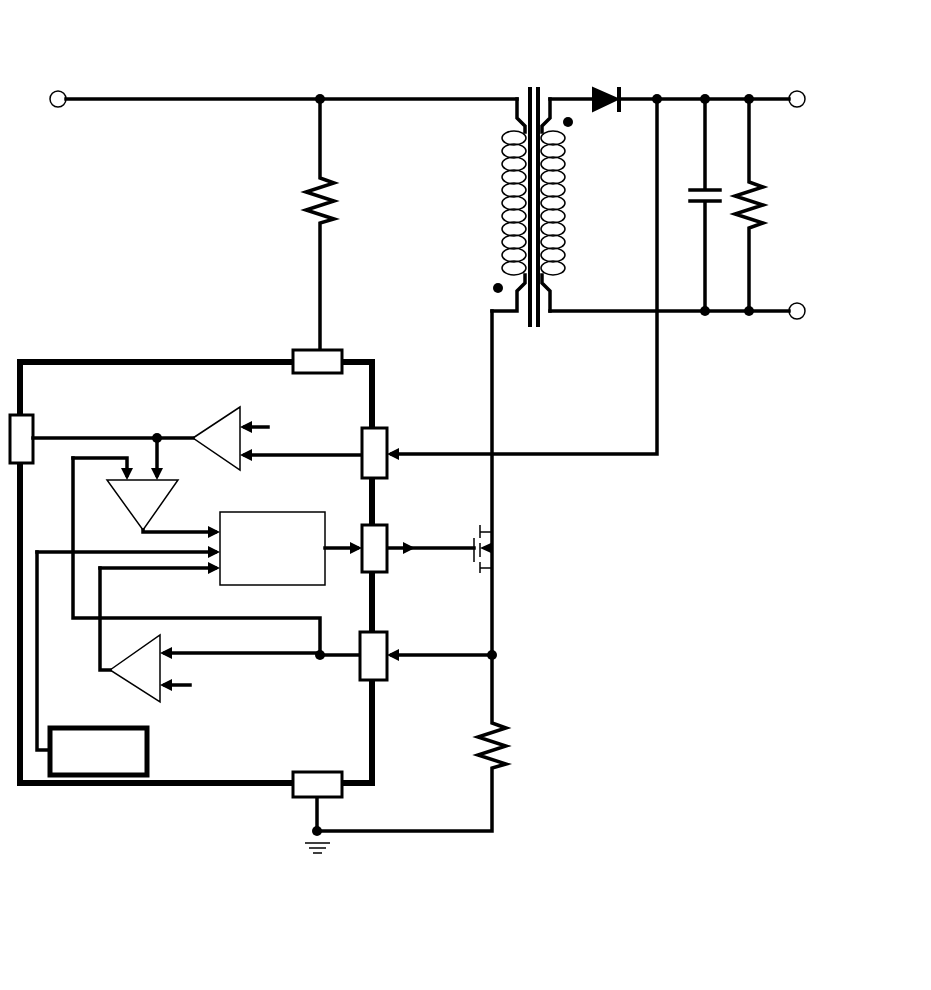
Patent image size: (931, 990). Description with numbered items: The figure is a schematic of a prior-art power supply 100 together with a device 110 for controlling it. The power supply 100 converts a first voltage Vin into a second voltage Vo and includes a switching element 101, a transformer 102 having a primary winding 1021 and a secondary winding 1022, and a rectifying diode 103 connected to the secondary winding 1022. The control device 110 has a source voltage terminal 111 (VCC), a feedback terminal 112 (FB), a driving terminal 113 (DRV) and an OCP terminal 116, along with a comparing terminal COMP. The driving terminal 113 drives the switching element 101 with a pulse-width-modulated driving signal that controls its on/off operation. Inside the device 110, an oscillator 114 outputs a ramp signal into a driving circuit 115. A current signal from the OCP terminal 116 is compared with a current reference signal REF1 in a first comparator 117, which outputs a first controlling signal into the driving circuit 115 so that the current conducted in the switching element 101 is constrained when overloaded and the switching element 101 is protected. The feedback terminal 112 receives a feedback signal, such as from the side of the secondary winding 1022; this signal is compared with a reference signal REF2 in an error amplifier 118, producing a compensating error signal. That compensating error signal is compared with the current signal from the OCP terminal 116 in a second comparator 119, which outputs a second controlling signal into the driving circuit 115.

The power supply 100 is at (212, 72).
The switching element 101 is at (512, 548).
The transformer 102 is at (528, 80).
The primary winding 1021 is at (474, 179).
The secondary winding 1022 is at (571, 176).
The rectifying diode 103 is at (606, 84).
The device for controlling the power supply 110 is at (130, 359).
The source voltage terminal 111 is at (345, 356).
The feedback terminal 112 is at (385, 432).
The driving terminal 113 is at (385, 530).
The oscillator 114 is at (150, 752).
The driving circuit 115 is at (265, 512).
The OCP terminal 116 is at (385, 638).
The first comparator 117 is at (118, 685).
The error amplifier 118 is at (210, 422).
The second comparator 119 is at (118, 512).